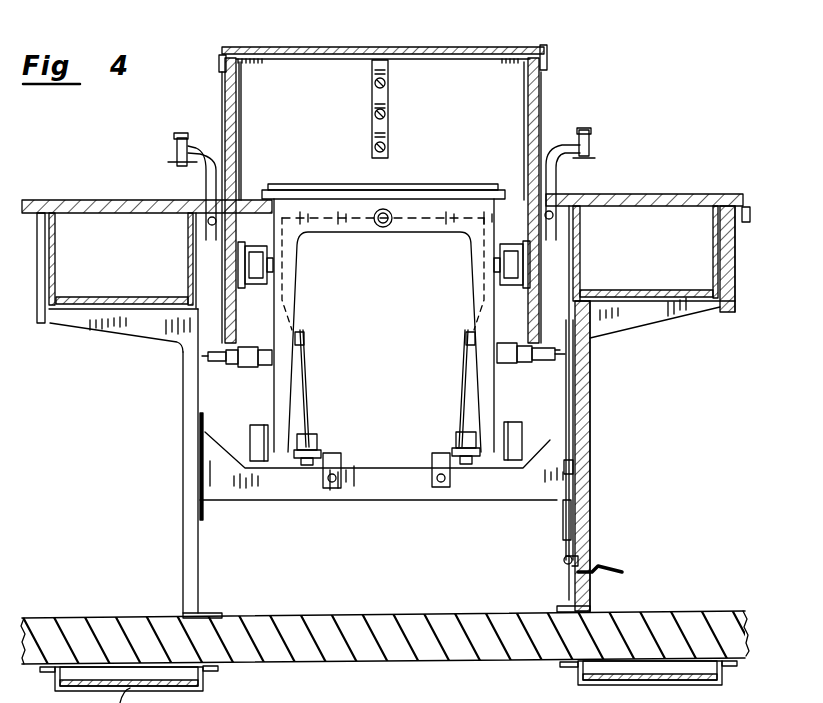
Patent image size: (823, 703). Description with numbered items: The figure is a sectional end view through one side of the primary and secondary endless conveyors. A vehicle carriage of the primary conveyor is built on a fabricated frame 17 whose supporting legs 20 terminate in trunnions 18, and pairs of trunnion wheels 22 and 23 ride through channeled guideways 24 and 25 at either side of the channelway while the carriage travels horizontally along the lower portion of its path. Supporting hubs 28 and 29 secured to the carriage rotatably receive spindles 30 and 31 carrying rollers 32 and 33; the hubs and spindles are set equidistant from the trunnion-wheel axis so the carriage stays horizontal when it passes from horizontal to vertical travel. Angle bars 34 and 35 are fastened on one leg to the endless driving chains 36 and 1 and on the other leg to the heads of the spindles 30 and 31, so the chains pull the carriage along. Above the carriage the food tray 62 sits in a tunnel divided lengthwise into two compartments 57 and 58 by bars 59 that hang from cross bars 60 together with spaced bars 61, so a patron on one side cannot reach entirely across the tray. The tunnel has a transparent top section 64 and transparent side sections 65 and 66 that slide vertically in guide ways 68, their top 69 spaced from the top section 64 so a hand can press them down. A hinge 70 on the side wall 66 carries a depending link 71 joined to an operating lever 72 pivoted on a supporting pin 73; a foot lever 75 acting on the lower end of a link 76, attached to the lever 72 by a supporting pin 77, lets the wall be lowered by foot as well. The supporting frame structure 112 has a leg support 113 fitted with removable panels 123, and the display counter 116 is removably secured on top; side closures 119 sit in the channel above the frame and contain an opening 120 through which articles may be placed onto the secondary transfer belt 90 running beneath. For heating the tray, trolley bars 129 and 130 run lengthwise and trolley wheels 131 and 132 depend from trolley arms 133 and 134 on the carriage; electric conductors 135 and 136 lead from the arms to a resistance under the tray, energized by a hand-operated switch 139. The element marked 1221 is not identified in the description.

The endless driving chain 1 is at (556, 360).
The fabricated frame 17 is at (455, 236).
The trunnion wheel 18 is at (258, 462).
The supporting leg 20 is at (285, 420).
The trunnion wheel 22 is at (268, 278).
The trunnion wheel 23 is at (497, 268).
The channeled guideway 24 is at (260, 243).
The channeled guideway 25 is at (512, 242).
The supporting hub 28 is at (520, 362).
The supporting hub 29 is at (264, 366).
The spindle 30 is at (250, 347).
The spindle 31 is at (512, 343).
The roller 32 is at (238, 366).
The roller 33 is at (538, 360).
The angle bar 34 is at (210, 358).
The angle bar 35 is at (555, 348).
The endless driving chain 36 is at (207, 374).
The compartment 57 is at (288, 72).
The compartment 58 is at (445, 70).
The bar 59 is at (390, 102).
The cross bar 60 is at (336, 60).
The spaced bar 61 is at (375, 148).
The food tray 62 is at (405, 186).
The top section 64 is at (405, 47).
The side section 65 is at (541, 108).
The side section 66 is at (238, 120).
The guide way 68 is at (240, 140).
The top of side wall member 69 is at (548, 62).
The hinge 70 is at (567, 198).
The link 71 is at (580, 218).
The operating lever 72 is at (580, 490).
The supporting pin 73 is at (568, 520).
The foot lever 75 is at (618, 570).
The link 76 is at (582, 540).
The supporting pin 77 is at (581, 506).
The transfer belt 90 is at (86, 298).
The frame structure 112 is at (90, 326).
The leg support 113 is at (182, 505).
The display counter 116 is at (98, 200).
The side closure 119 is at (40, 264).
The opening 120 is at (736, 254).
The panel 123 is at (592, 412).
The trolley bar 129 is at (335, 455).
The trolley bar 130 is at (446, 450).
The trolley wheel 131 is at (306, 466).
The trolley wheel 132 is at (466, 466).
The trolley arm 133 is at (304, 405).
The trolley arm 134 is at (462, 400).
The electric conductor 135 is at (302, 340).
The electric conductor 136 is at (468, 340).
The switch 139 is at (383, 208).
The tab 1221 is at (748, 220).